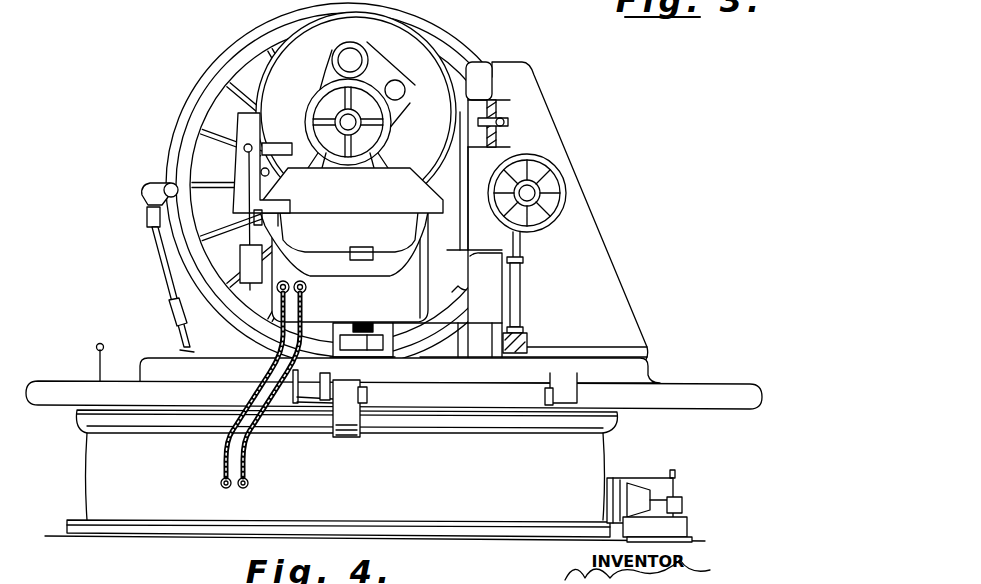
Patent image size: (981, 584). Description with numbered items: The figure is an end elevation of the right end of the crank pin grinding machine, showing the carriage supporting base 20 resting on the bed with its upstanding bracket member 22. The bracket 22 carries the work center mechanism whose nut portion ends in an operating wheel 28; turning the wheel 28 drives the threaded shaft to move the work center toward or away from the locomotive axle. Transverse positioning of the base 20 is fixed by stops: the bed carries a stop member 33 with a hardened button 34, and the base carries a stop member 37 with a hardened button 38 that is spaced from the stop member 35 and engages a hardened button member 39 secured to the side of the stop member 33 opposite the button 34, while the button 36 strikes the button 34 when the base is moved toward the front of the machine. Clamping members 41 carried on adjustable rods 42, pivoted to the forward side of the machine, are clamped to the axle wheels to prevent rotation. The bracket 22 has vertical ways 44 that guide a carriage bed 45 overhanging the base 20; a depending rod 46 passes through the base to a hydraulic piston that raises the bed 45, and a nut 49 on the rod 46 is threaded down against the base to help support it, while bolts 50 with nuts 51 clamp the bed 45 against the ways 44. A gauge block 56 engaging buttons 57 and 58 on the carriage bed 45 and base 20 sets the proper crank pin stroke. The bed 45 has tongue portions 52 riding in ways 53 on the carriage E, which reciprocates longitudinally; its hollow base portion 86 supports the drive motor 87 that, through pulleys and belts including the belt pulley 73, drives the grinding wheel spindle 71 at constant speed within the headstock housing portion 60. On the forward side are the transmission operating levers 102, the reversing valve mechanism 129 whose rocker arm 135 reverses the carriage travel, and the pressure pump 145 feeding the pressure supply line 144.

The carriage supporting base 20 is at (710, 396).
The upstanding bracket member 22 is at (595, 230).
The operating wheel 28 is at (555, 178).
The stop member 33 is at (350, 432).
The hardened button 34 is at (360, 398).
The stop member 35 is at (570, 395).
The button 36 is at (548, 400).
The stop member 37 is at (296, 400).
The hardened button 38 is at (318, 392).
The hardened button member 39 is at (326, 396).
The clamping member 41 is at (160, 193).
The adjustable rod 42 is at (162, 278).
The vertical ways 44 is at (502, 82).
The carriage bed 45 is at (472, 299).
The depending rod 46 is at (363, 333).
The nut 49 is at (368, 357).
The bolt 50 is at (500, 126).
The nut 51 is at (510, 113).
The tongue portion 52 is at (276, 218).
The ways 53 is at (268, 202).
The gauge block 56 is at (520, 295).
The button 57 is at (525, 259).
The button 58 is at (528, 333).
The housing portion 60 is at (278, 60).
The spindle 71 is at (352, 56).
The belt pulley 73 is at (400, 88).
The hollow base portion 86 is at (344, 267).
The drive motor 87 is at (326, 100).
The operating lever 102 is at (247, 151).
The reversing valve mechanism 129 is at (262, 266).
The rocker arm 135 is at (254, 222).
The pressure supply line 144 is at (663, 478).
The pressure pump 145 is at (682, 505).